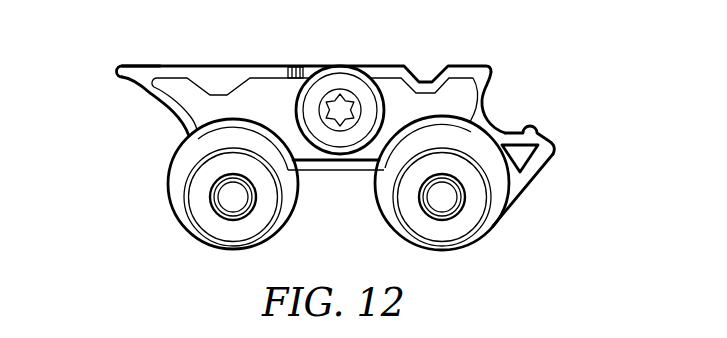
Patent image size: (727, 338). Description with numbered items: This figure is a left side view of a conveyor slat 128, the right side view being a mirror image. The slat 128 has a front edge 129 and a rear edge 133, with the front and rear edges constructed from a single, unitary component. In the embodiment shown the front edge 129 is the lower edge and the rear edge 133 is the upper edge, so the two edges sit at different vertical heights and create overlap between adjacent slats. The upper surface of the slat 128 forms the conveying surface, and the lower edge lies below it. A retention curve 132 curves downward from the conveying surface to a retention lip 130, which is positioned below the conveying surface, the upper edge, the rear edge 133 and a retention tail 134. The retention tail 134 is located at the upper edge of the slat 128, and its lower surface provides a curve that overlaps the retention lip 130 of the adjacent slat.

The slat 128 is at (342, 170).
The front edge 129 is at (553, 146).
The retention lip 130 is at (531, 126).
The retention curve 132 is at (484, 118).
The rear edge 133 is at (122, 78).
The retention tail 134 is at (122, 66).